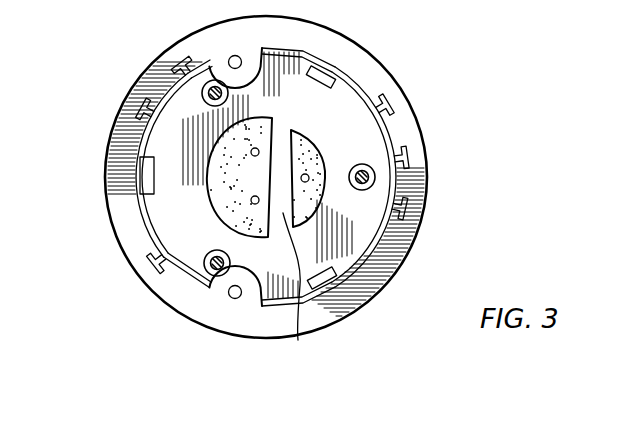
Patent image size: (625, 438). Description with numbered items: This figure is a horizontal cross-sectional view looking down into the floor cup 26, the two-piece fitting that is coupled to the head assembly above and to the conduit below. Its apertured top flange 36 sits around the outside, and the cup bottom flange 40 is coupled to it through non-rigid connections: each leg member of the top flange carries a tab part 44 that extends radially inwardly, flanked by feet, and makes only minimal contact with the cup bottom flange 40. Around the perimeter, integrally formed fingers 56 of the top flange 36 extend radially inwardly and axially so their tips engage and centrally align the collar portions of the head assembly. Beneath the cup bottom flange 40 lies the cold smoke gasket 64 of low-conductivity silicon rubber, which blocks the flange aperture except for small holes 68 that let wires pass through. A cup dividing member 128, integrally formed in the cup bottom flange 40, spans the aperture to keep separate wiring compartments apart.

The floor cup 26 is at (430, 127).
The top flange 36 is at (375, 82).
The cup bottom flange 40 is at (160, 215).
The tab part 44 is at (323, 70).
The fingers 56 is at (199, 67).
The cold smoke gasket 64 is at (213, 215).
The small holes 68 is at (259, 150).
The cup dividing member 128 is at (302, 291).